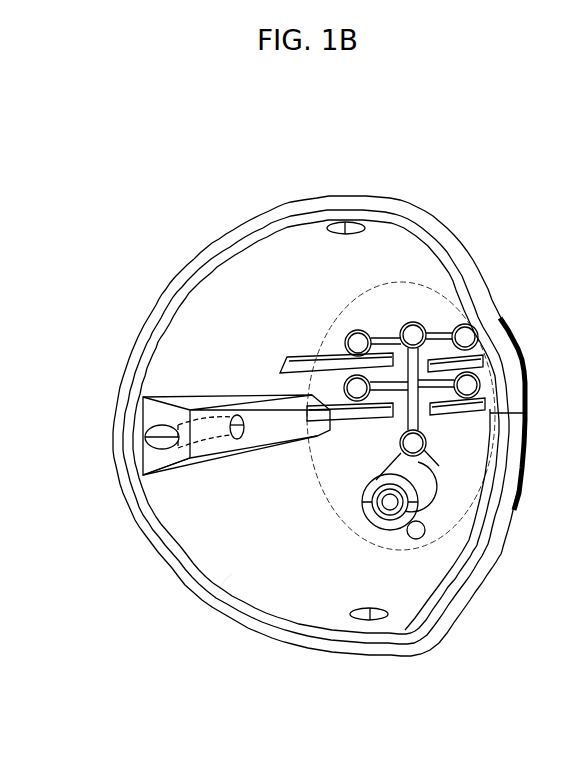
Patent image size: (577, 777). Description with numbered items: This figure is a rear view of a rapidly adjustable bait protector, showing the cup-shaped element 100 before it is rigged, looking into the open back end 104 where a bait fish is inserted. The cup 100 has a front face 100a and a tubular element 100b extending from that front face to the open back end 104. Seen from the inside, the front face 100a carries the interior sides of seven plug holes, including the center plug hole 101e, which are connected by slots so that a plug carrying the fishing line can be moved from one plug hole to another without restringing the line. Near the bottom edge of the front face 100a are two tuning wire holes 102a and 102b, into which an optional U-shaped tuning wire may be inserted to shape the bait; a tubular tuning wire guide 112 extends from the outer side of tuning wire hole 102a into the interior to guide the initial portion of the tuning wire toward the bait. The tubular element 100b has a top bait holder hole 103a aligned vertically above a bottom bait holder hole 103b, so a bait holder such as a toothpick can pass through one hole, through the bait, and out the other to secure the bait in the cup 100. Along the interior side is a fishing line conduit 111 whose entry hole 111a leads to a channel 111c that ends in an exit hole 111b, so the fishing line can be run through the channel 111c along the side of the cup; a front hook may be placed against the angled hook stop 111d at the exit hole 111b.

The cup-shaped element 100 is at (324, 165).
The front face 100a is at (403, 313).
The tubular element 100b is at (237, 567).
The center plug hole 101e is at (413, 388).
The tuning wire hole 102a is at (375, 513).
The tuning wire hole 102b is at (410, 537).
The top bait holder hole 103a is at (343, 234).
The bottom bait holder hole 103b is at (372, 608).
The open back end 104 is at (148, 582).
The fishing line conduit 111 is at (290, 417).
The entry hole 111a is at (235, 421).
The exit hole 111b is at (158, 433).
The channel 111c is at (210, 427).
The angled hook stop 111d is at (163, 463).
The tubular tuning wire guide 112 is at (425, 482).